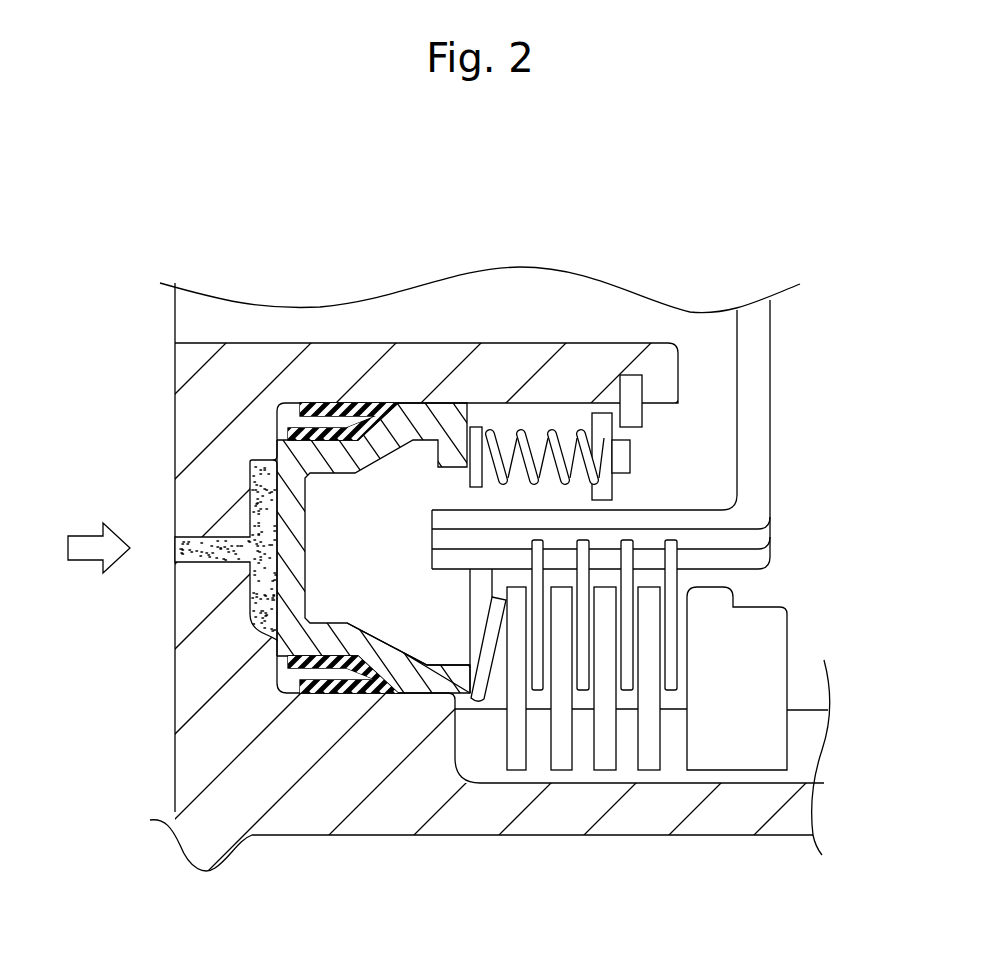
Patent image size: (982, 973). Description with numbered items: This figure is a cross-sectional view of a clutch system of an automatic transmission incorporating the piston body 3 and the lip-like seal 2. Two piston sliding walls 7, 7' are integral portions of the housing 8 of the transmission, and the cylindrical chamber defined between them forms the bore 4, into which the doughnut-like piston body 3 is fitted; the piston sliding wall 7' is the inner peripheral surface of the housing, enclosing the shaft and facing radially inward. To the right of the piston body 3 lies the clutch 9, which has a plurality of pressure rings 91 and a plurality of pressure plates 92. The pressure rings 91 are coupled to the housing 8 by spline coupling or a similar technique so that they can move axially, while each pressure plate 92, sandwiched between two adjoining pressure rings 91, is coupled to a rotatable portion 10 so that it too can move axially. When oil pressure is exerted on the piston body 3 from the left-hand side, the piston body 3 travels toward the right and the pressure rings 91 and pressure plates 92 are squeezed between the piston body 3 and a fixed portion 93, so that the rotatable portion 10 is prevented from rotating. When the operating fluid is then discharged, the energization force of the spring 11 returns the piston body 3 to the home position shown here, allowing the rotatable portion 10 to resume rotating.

The lip-like seal 2 is at (322, 392).
The piston body 3 is at (371, 616).
The bore 4 is at (388, 565).
The piston sliding wall 7 is at (388, 448).
The piston sliding wall 7' is at (373, 666).
The housing 8 is at (348, 845).
The clutch 9 is at (763, 575).
The rotatable portion 10 is at (781, 504).
The spring 11 is at (537, 418).
The pressure rings 91 is at (526, 753).
The pressure plates 92 is at (531, 557).
The fixed portion 93 is at (787, 637).